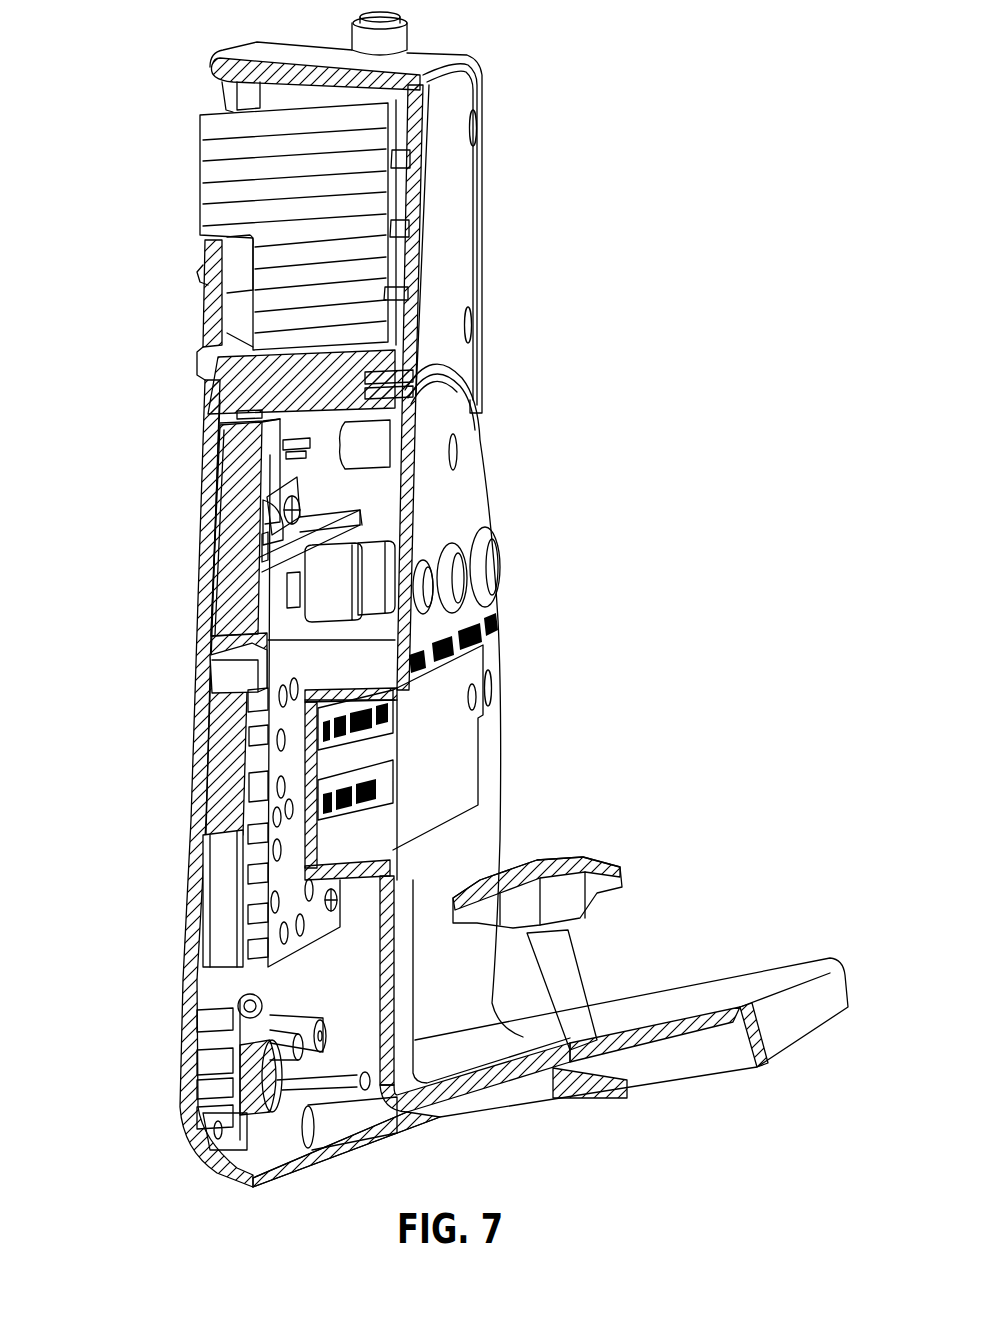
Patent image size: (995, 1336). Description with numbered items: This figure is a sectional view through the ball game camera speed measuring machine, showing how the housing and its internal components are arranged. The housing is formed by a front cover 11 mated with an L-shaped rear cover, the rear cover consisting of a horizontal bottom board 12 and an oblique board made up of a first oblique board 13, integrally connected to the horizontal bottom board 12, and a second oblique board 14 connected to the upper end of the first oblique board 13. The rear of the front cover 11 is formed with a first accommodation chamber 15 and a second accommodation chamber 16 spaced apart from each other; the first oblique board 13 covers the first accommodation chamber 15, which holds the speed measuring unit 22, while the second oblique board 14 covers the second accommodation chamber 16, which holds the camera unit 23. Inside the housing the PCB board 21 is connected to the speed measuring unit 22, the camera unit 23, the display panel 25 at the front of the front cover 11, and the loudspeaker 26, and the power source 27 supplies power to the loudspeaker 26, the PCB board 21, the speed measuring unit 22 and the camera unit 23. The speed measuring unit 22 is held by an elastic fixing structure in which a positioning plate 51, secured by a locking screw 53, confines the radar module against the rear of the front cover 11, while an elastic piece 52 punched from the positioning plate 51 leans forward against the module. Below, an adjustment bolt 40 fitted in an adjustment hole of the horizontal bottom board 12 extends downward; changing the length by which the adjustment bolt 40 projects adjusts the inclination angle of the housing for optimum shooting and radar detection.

The front cover 11 is at (210, 526).
The horizontal bottom board 12 is at (670, 1033).
The first oblique board 13 is at (488, 631).
The second oblique board 14 is at (426, 208).
The first accommodation chamber 15 is at (232, 415).
The second accommodation chamber 16 is at (235, 300).
The PCB board 21 is at (255, 719).
The speed measuring unit 22 is at (232, 471).
The camera unit 23 is at (340, 165).
The display panel 25 is at (197, 587).
The loudspeaker 26 is at (243, 1067).
The power source 27 is at (365, 755).
The adjustment bolt 40 is at (568, 997).
The positioning plate 51 is at (303, 483).
The elastic piece 52 is at (273, 532).
The locking screw 53 is at (292, 513).